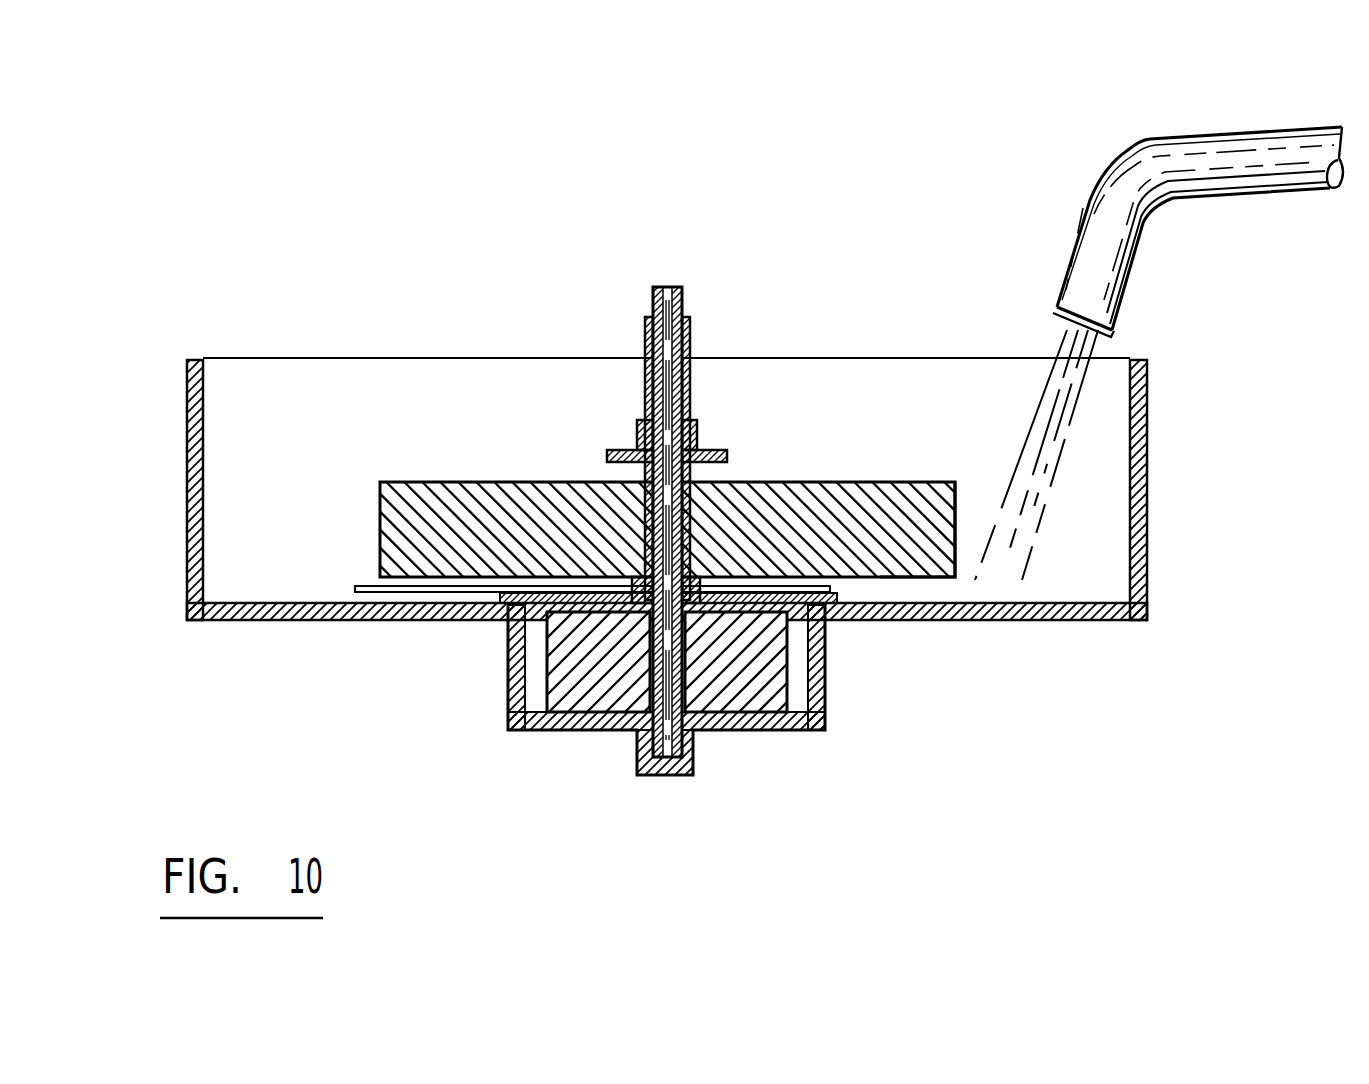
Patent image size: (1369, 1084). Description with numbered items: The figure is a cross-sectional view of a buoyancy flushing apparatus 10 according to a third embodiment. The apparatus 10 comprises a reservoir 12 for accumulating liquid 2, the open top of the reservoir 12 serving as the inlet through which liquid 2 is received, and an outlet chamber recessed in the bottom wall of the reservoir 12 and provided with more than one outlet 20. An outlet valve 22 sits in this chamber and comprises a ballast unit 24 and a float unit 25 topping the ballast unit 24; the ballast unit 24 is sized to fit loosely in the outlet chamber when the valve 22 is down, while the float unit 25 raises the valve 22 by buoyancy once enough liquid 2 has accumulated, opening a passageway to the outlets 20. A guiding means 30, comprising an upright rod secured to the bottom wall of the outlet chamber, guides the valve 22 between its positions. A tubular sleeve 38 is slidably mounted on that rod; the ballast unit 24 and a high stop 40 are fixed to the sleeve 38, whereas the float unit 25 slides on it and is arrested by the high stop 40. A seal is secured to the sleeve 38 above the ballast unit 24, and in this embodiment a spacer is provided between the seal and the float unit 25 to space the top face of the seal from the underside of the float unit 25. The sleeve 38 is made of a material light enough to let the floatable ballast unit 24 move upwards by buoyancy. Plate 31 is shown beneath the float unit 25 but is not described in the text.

The buoyancy flushing apparatus 10 is at (408, 158).
The reservoir 12 is at (601, 489).
The liquid 2 is at (1052, 318).
The outlet valve 22 is at (457, 482).
The float unit 25 is at (897, 514).
The plate 31 is at (368, 588).
The high stop 40 is at (716, 448).
The tubular sleeve 38 is at (690, 345).
The outlet 20 is at (512, 676).
The ballast unit 24 is at (750, 690).
The guiding means 30 is at (668, 287).